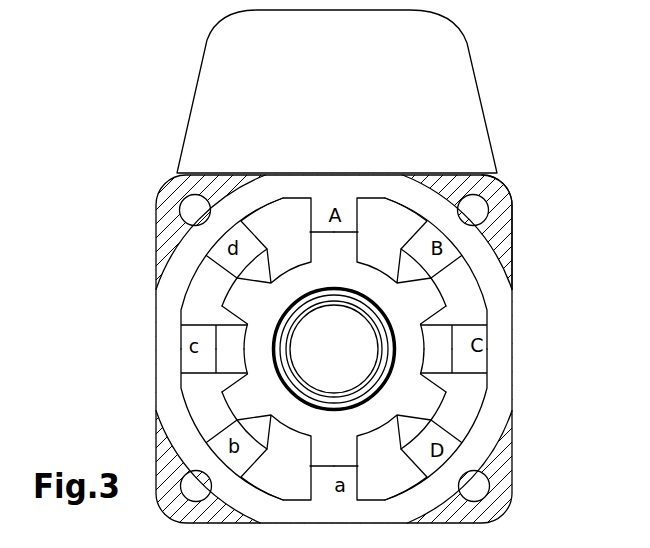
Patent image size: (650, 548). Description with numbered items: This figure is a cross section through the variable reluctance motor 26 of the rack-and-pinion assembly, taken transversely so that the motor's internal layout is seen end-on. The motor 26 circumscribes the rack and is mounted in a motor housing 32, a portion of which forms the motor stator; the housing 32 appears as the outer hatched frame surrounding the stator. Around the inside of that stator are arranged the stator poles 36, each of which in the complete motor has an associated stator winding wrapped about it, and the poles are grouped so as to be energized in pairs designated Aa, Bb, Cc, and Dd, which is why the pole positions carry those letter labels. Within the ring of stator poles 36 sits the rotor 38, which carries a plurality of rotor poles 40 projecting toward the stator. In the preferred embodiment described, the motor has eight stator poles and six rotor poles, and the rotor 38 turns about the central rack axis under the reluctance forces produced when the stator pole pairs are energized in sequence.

The variable reluctance motor 26 is at (518, 297).
The motor housing 32 is at (503, 222).
The stator pole 36 is at (409, 240).
The rotor 38 is at (423, 322).
The rotor pole 40 is at (217, 404).